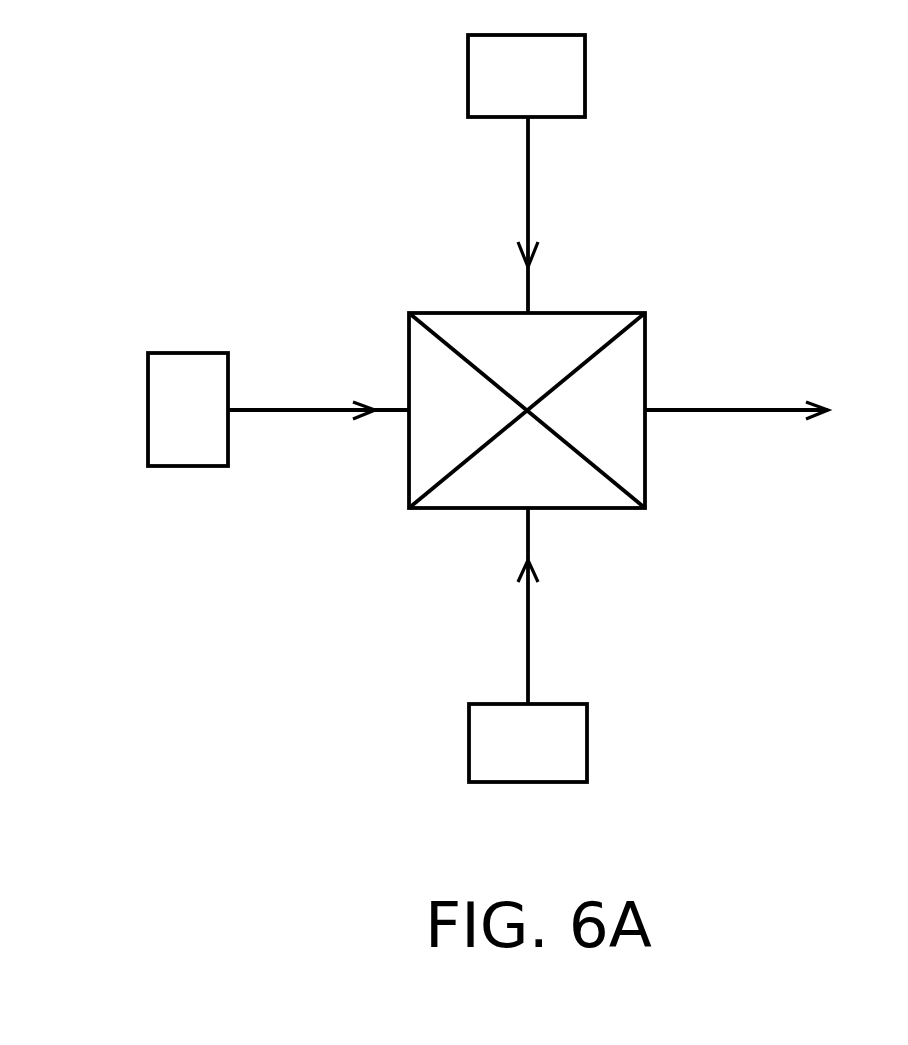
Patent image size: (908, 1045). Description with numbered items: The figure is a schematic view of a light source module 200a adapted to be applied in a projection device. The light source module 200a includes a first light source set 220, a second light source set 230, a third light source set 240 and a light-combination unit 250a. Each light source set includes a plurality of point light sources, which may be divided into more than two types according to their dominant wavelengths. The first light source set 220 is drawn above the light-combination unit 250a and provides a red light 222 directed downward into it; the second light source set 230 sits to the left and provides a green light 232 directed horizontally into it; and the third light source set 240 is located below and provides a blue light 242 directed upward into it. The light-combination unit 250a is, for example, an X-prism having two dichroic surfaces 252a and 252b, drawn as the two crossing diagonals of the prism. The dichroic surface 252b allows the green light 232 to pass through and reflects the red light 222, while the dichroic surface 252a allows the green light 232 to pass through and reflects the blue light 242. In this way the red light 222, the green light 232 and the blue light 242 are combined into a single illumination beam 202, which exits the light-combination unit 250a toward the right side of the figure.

The light source module 200a is at (898, 791).
The illumination beam 202 is at (780, 410).
The first light source set 220 is at (585, 78).
The red light 222 is at (528, 163).
The second light source set 230 is at (190, 466).
The green light 232 is at (300, 412).
The third light source set 240 is at (587, 740).
The blue light 242 is at (528, 640).
The light-combination unit 250a is at (633, 455).
The dichroic surface 252a is at (620, 335).
The dichroic surface 252b is at (612, 485).